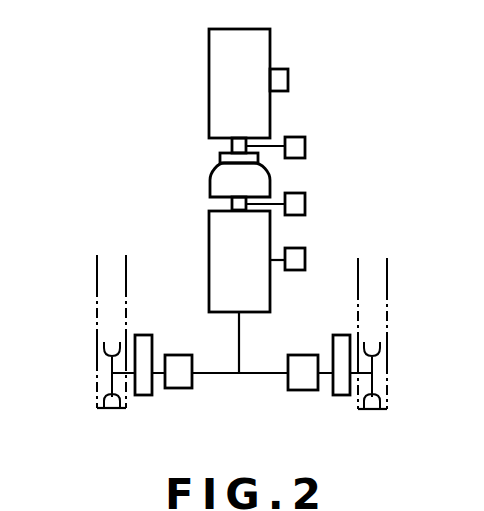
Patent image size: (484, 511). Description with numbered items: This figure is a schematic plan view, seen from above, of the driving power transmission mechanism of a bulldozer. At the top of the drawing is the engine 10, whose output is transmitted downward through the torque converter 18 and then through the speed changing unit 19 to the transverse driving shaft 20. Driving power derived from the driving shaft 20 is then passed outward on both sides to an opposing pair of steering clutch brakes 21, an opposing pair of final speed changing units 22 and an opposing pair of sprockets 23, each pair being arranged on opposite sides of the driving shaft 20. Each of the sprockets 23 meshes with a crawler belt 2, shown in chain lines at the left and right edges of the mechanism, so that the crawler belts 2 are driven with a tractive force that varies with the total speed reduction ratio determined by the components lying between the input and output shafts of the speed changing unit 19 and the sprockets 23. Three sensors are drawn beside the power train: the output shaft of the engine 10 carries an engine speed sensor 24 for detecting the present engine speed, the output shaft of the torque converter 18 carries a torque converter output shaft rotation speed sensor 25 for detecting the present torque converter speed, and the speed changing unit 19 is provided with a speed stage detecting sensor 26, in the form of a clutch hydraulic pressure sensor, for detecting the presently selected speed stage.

The crawler belt 2 is at (102, 294).
The engine 10 is at (222, 73).
The torque converter 18 is at (216, 190).
The speed changing unit 19 is at (220, 251).
The driving shaft 20 is at (220, 373).
The steering clutch brakes 21 is at (181, 383).
The final speed changing units 22 is at (143, 388).
The sprockets 23 is at (112, 360).
The engine speed sensor 24 is at (298, 148).
The torque converter output shaft rotation speed sensor 25 is at (298, 205).
The speed stage detecting sensor 26 is at (298, 258).